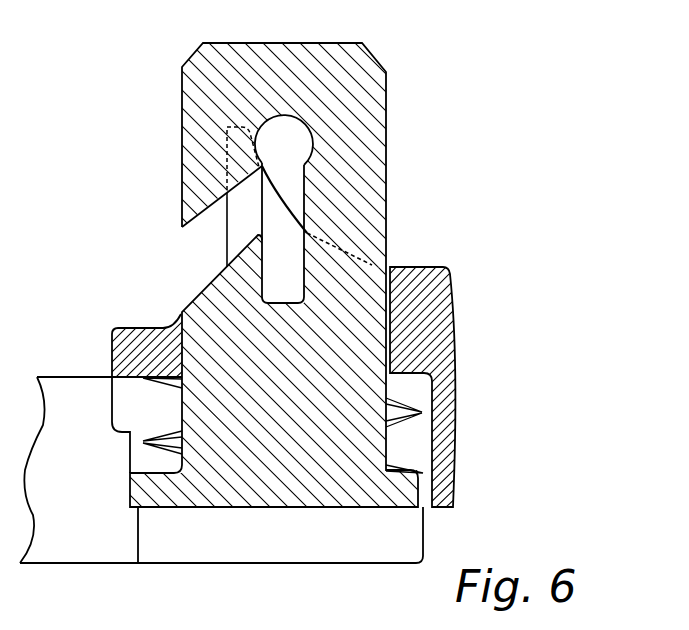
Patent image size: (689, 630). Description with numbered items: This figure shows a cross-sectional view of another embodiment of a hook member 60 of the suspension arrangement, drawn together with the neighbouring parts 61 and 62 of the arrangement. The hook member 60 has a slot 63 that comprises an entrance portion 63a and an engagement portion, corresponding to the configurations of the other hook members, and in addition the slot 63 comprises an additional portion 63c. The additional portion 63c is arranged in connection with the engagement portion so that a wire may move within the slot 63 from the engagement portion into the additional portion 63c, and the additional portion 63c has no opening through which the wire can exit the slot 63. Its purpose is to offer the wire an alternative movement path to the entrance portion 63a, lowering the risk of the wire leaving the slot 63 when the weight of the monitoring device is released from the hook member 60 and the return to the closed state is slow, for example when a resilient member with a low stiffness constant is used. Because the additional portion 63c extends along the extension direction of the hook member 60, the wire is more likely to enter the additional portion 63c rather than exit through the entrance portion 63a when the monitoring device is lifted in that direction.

The hook member 60 is at (203, 85).
The retaining clip 61 is at (420, 328).
The lower base block 62 is at (253, 218).
The slot 63 is at (303, 131).
The entrance portion 63a is at (196, 248).
The additional portion 63c is at (282, 260).